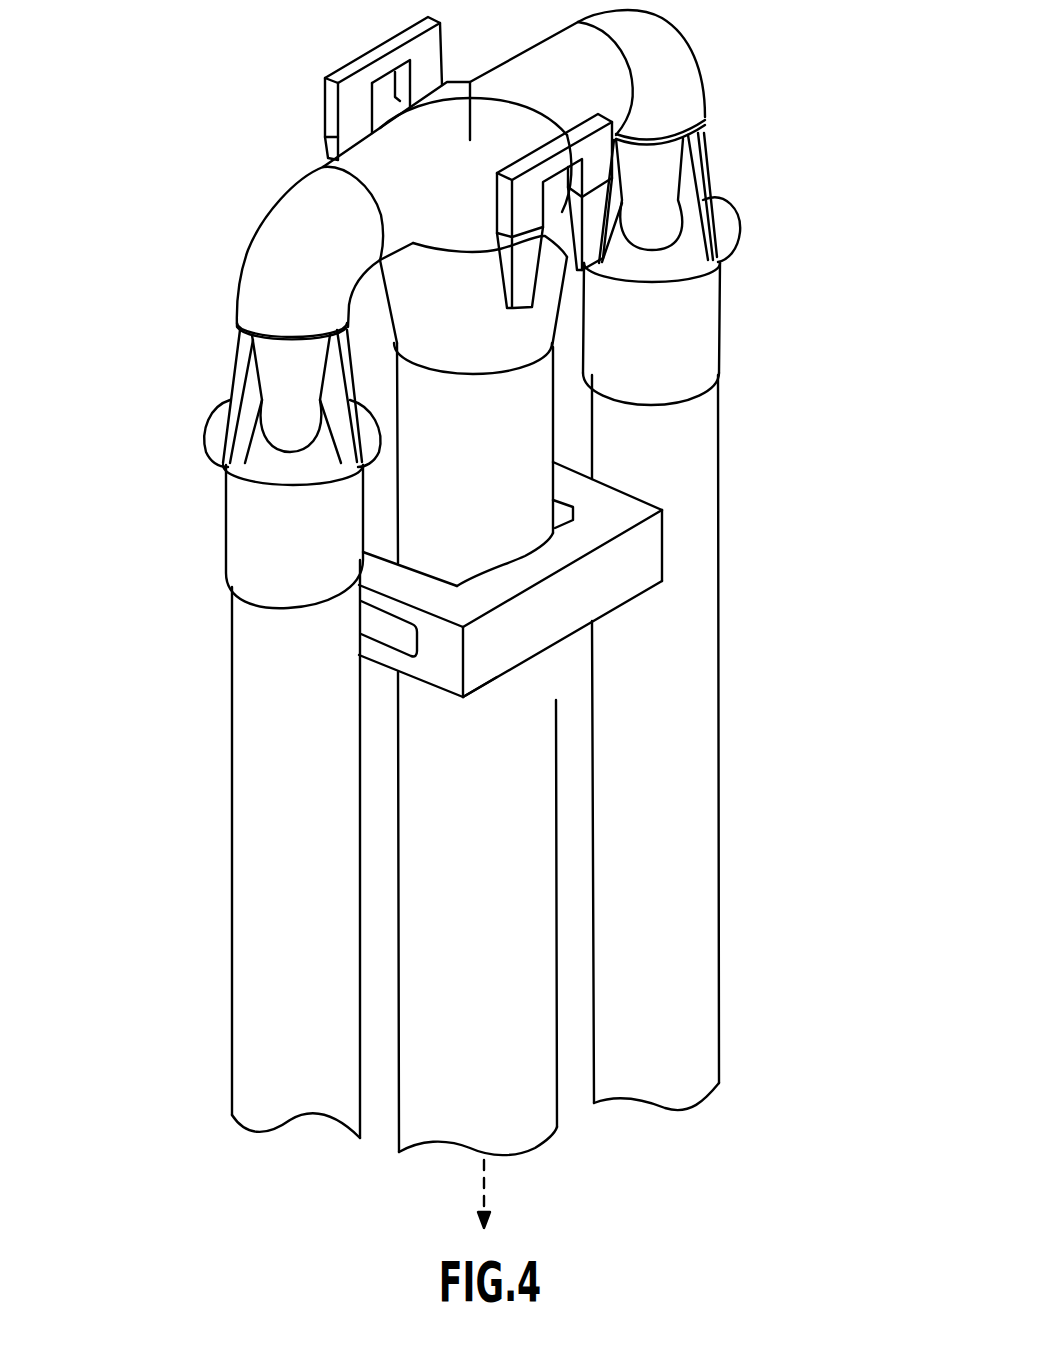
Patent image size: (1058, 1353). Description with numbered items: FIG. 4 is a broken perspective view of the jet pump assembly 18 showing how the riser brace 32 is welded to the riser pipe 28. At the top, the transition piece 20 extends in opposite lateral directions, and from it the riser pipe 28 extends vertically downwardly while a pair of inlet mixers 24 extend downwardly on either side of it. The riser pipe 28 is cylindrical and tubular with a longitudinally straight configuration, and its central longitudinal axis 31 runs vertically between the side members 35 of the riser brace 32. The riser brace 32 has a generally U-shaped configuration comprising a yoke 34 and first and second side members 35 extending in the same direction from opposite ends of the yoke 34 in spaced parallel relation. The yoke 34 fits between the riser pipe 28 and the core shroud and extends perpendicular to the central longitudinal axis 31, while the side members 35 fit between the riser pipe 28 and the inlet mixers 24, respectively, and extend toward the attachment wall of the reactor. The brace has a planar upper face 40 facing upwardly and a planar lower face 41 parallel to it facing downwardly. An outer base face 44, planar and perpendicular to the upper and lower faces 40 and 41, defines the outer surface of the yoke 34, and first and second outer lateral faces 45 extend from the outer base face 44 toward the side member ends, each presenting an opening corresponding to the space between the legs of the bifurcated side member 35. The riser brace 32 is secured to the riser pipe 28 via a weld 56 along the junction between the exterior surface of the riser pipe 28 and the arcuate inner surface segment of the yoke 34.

The jet pump assembly 18 is at (232, 345).
The transition piece 20 is at (318, 192).
The inlet mixers 24 is at (230, 608).
The riser pipe 28 is at (560, 393).
The central longitudinal axis 31 is at (490, 1187).
The riser brace 32 is at (665, 548).
The yoke 34 is at (522, 640).
The side members 35 is at (615, 483).
The upper face 40 is at (623, 513).
The lower face 41 is at (497, 677).
The outer base face 44 is at (570, 613).
The outer lateral faces 45 is at (443, 657).
The weld 56 is at (540, 556).